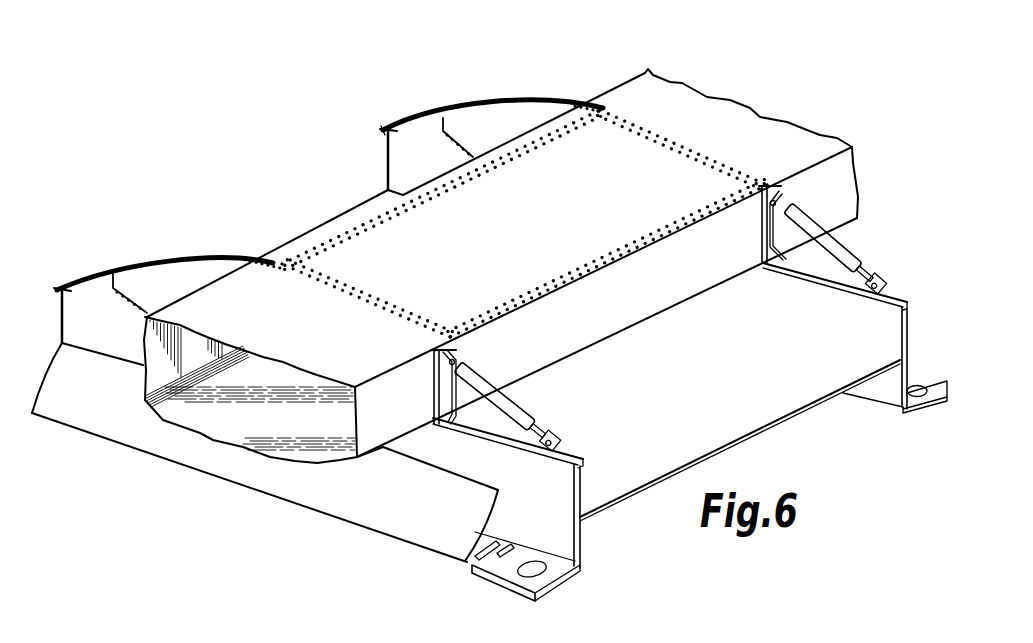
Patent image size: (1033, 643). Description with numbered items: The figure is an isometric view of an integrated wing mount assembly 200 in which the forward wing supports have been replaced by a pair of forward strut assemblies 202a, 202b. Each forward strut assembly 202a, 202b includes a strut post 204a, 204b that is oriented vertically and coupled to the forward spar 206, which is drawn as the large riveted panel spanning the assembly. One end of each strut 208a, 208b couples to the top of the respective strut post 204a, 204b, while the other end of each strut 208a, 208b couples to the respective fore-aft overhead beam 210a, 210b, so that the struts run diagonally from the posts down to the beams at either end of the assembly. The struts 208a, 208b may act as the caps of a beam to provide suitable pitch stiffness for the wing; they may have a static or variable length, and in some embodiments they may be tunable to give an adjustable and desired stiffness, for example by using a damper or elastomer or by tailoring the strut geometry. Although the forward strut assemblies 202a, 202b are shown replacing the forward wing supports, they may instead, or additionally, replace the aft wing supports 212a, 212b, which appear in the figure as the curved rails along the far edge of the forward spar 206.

The integrated wing mount assembly 200 is at (323, 78).
The forward strut assembly 202a is at (849, 253).
The forward strut assembly 202b is at (543, 414).
The strut post 204a is at (762, 214).
The strut post 204b is at (432, 376).
The forward spar 206 is at (617, 300).
The strut 208a is at (843, 238).
The strut 208b is at (515, 395).
The fore-aft overhead beam 210a is at (907, 331).
The fore-aft overhead beam 210b is at (582, 488).
The aft wing support 212a is at (505, 118).
The aft wing support 212b is at (178, 276).